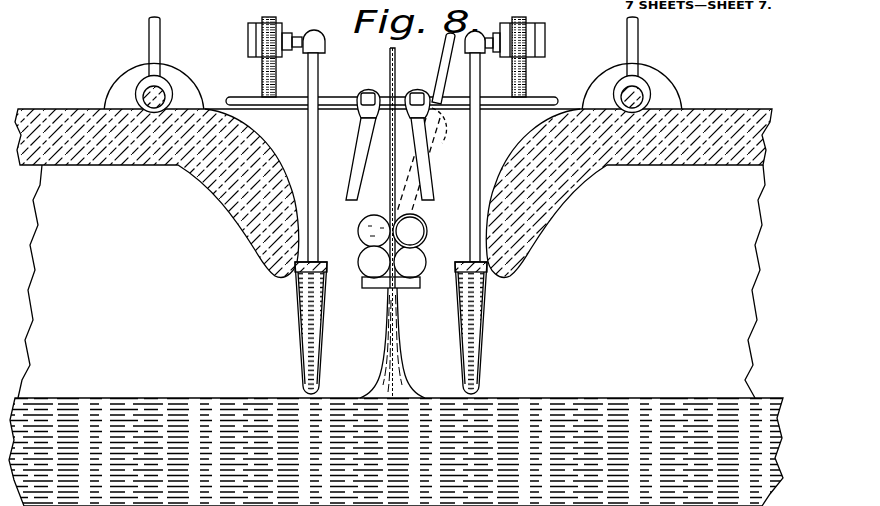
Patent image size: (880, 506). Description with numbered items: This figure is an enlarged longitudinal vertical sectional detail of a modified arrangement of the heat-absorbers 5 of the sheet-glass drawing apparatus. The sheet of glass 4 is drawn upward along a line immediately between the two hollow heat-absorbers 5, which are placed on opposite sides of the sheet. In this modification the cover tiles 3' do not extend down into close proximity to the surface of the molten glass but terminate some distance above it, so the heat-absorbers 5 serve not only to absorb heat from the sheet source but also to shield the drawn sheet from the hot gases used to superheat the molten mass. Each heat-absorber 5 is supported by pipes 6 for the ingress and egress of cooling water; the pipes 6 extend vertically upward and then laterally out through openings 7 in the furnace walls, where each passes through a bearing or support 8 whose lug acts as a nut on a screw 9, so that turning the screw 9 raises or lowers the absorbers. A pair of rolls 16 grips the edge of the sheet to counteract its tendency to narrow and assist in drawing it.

The tiles 3' is at (393, 193).
The sheet of glass 4 is at (397, 72).
The heat-absorbers 5 is at (300, 336).
The pipes 6 is at (314, 222).
The openings 7 is at (608, 406).
The bearing or support 8 is at (248, 50).
The screw 9 is at (272, 20).
The rolls 16 is at (370, 268).